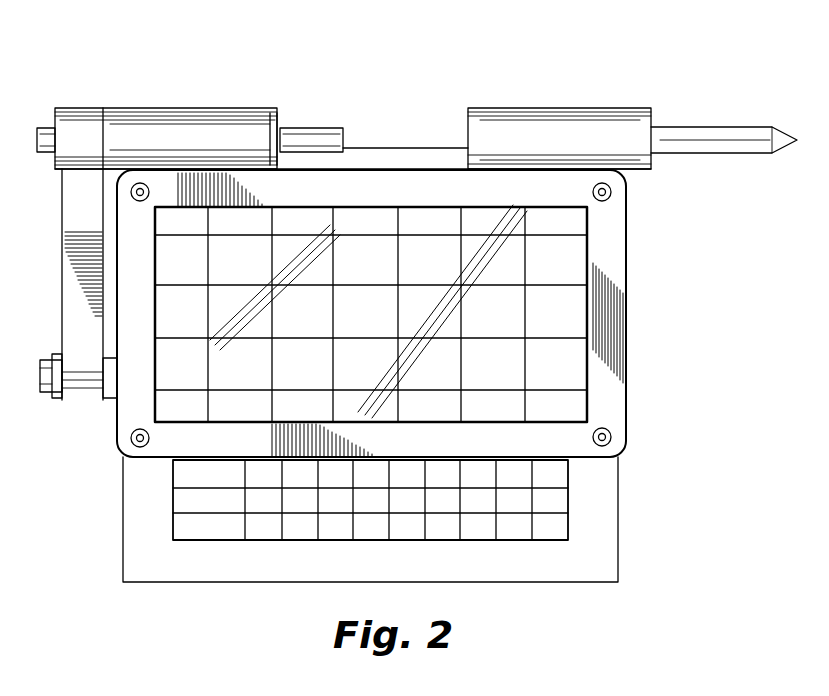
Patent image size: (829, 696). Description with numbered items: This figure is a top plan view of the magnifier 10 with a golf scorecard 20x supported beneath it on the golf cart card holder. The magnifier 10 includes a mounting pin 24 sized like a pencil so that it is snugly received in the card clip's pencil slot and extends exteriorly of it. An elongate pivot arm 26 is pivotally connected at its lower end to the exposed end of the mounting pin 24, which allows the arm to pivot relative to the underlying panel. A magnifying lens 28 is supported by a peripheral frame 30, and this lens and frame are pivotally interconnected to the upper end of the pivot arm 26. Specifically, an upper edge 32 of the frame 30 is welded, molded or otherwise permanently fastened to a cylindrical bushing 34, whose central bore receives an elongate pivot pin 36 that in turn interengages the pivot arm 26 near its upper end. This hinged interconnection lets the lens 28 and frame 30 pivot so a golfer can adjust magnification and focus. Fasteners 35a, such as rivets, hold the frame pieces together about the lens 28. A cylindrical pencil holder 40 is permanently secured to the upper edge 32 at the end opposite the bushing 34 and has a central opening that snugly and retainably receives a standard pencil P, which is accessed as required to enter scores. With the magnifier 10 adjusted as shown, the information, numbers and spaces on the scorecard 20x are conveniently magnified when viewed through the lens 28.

The magnifier 10 is at (626, 318).
The scorecard 20x is at (432, 148).
The mounting pin 24 is at (37, 384).
The pivot arm 26 is at (62, 287).
The magnifying lens 28 is at (545, 407).
The peripheral frame 30 is at (626, 246).
The upper edge 32 is at (395, 168).
The cylindrical bushing 34 is at (153, 108).
The fasteners 35a is at (605, 439).
The pivot pin 36 is at (300, 128).
The pencil holder 40 is at (590, 108).
The pencil P is at (700, 127).